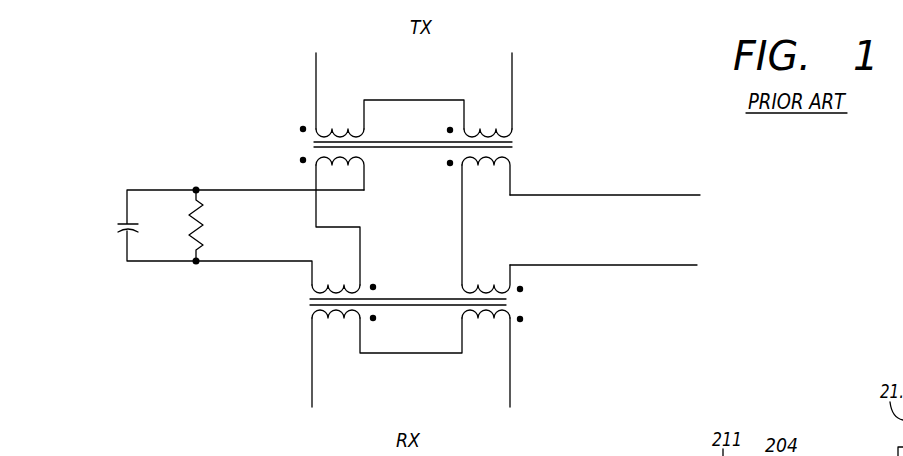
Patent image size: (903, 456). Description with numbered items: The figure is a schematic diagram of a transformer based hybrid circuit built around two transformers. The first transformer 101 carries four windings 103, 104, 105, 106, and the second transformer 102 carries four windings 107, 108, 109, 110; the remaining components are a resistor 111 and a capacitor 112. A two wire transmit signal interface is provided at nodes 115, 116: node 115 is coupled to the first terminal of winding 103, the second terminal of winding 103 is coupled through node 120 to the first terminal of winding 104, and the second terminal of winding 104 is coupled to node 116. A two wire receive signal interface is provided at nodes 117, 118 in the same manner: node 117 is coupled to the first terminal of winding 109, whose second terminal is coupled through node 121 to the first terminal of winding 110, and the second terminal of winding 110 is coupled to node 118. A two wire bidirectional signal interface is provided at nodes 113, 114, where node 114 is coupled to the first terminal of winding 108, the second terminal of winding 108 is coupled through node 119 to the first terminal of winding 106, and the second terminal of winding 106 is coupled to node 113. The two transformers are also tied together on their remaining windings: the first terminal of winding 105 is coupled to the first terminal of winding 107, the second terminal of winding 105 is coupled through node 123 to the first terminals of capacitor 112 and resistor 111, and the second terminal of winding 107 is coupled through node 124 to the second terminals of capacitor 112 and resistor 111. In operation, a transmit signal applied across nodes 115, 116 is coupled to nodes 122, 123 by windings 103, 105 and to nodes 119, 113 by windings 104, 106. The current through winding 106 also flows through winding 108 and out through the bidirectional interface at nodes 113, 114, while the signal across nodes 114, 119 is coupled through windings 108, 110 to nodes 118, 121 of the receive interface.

The transformer 101 is at (512, 147).
The transformer 102 is at (506, 304).
The winding 103 is at (352, 125).
The winding 104 is at (474, 126).
The winding 105 is at (338, 172).
The winding 106 is at (474, 166).
The winding 107 is at (325, 280).
The winding 108 is at (473, 282).
The winding 109 is at (325, 322).
The winding 110 is at (470, 322).
The resistor 111 is at (200, 238).
The capacitor 112 is at (122, 220).
The node 113 is at (637, 195).
The node 114 is at (640, 265).
The node 115 is at (316, 60).
The node 116 is at (513, 68).
The node 117 is at (308, 385).
The node 118 is at (508, 388).
The node 119 is at (461, 228).
The node 120 is at (414, 100).
The node 121 is at (388, 353).
The node 122 is at (361, 243).
The node 123 is at (242, 190).
The node 124 is at (224, 262).